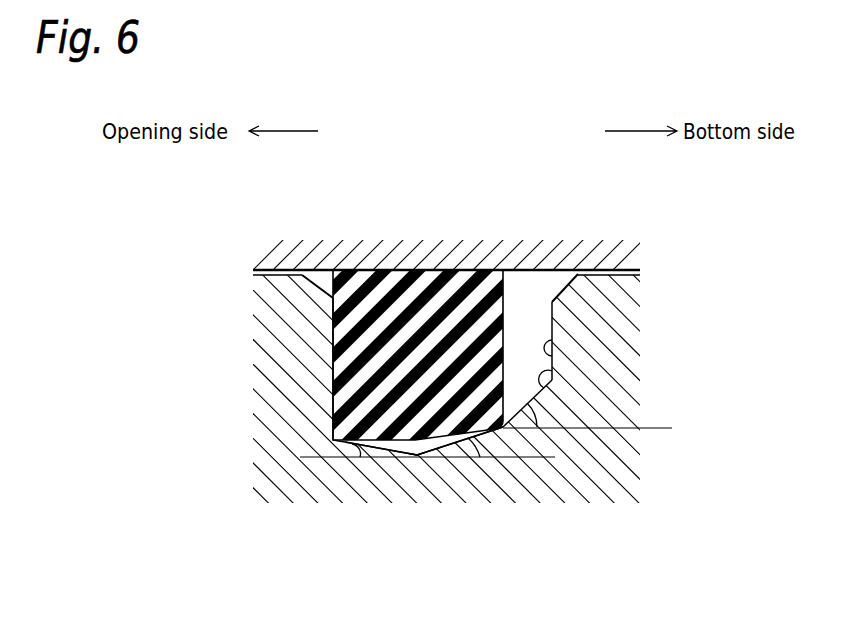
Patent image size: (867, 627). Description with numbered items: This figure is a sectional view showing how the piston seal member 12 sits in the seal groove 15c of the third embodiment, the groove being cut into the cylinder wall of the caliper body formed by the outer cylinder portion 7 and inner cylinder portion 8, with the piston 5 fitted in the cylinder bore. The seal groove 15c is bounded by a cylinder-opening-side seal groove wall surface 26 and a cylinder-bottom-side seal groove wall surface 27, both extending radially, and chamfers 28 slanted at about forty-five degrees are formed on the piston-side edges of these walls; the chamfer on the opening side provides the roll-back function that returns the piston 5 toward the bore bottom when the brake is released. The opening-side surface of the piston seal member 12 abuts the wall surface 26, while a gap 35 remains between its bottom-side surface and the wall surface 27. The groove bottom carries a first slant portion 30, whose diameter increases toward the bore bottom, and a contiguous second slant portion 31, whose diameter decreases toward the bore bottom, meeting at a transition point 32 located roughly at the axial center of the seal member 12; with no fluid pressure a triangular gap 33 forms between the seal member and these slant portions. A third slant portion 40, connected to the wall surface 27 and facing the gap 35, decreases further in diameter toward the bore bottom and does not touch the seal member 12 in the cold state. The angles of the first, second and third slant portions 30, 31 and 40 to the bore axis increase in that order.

The piston 5 is at (470, 222).
The outer cylinder portion 7 is at (437, 387).
The inner cylinder portion 8 is at (600, 328).
The piston seal member 12 is at (380, 272).
The seal groove 15c is at (530, 281).
The cylinder-opening-side seal groove wall surface 26 is at (335, 352).
The cylinder-bottom-side seal groove wall surface 27 is at (553, 348).
The chamfer 28 is at (318, 283).
The first slant portion 30 is at (372, 448).
The second slant portion 31 is at (490, 433).
The transition point 32 is at (416, 455).
The gap 33 is at (405, 455).
The gap 35 is at (553, 302).
The third slant portion 40 is at (552, 375).